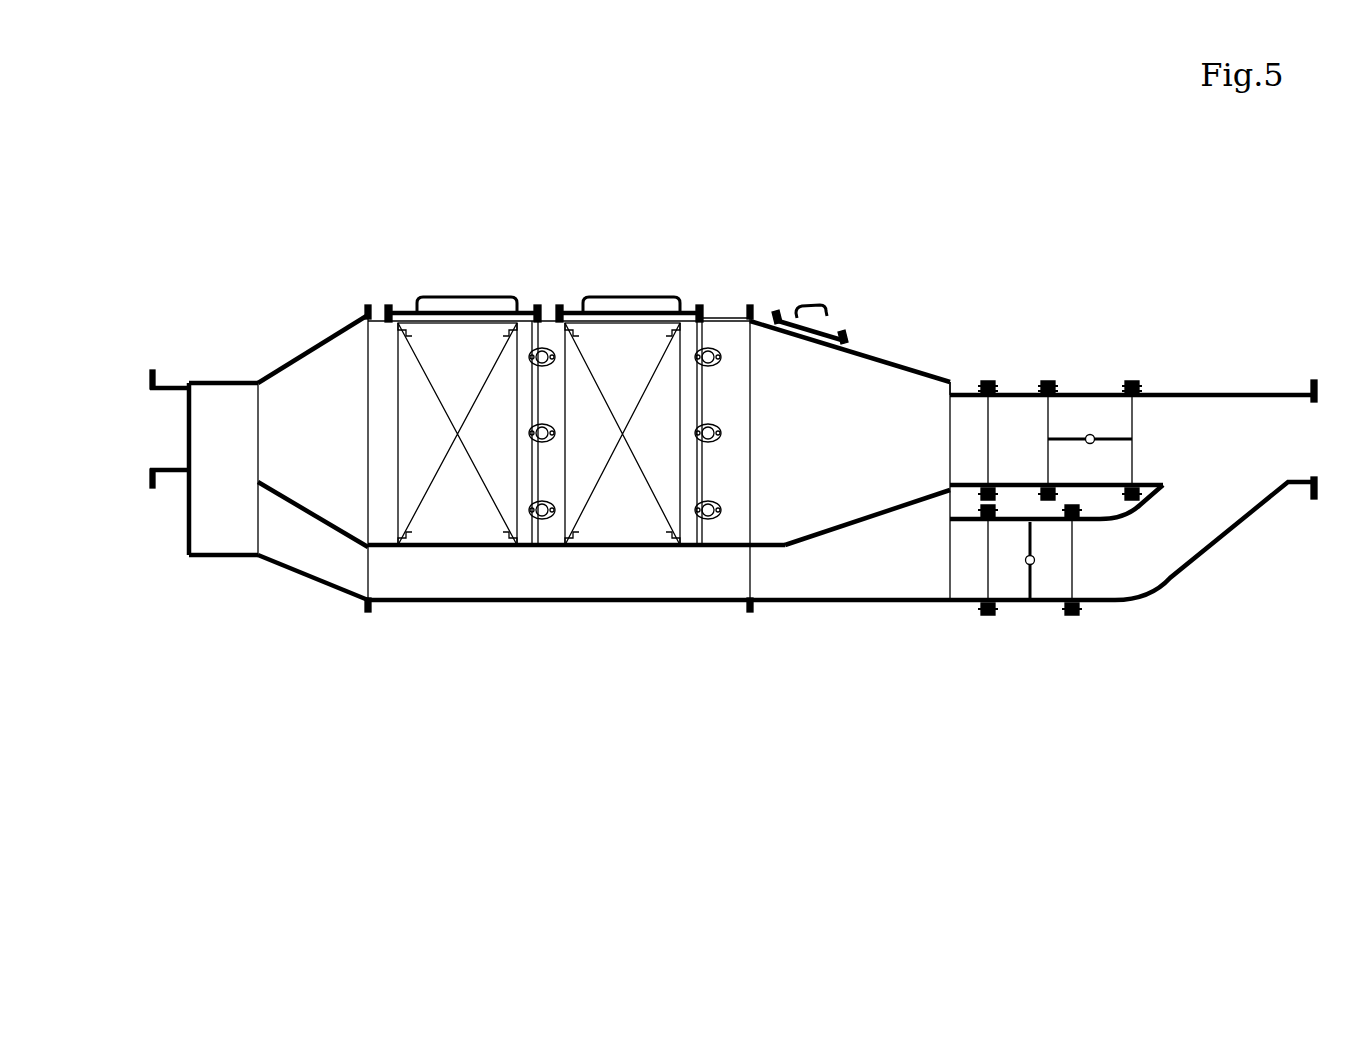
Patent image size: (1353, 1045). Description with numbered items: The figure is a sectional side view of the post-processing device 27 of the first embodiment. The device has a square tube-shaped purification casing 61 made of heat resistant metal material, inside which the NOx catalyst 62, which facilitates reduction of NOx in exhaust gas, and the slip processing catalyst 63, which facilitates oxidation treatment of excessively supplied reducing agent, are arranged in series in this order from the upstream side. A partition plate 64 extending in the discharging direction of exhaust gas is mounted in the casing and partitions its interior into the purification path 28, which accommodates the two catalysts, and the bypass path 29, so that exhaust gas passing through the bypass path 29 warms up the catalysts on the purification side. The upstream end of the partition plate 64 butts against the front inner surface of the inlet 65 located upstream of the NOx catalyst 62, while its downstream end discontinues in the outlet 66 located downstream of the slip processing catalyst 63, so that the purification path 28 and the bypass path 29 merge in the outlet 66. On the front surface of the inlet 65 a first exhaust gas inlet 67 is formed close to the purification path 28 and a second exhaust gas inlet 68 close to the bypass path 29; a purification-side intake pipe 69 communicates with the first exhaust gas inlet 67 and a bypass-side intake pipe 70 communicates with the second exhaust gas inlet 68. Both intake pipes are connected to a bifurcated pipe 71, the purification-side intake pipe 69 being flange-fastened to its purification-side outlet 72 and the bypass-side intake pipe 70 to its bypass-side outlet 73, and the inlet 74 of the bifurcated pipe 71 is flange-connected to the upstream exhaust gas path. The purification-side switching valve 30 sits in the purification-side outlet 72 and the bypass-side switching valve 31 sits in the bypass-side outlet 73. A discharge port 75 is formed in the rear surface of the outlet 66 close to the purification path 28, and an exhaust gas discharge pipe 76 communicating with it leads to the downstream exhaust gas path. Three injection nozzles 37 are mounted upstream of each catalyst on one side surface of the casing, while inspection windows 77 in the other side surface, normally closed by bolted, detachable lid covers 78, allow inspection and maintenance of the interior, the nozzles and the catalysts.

The post-processing device 27 is at (370, 255).
The purification path 28 is at (807, 510).
The bypass path 29 is at (657, 578).
The purification-side switching valve 30 is at (1100, 435).
The bypass-side switching valve 31 is at (1033, 540).
The injection nozzle 37 is at (548, 428).
The purification casing 61 is at (880, 355).
The NOx catalyst 62 is at (620, 520).
The slip processing catalyst 63 is at (455, 515).
The partition plate 64 is at (308, 497).
The inlet 65 is at (913, 556).
The outlet 66 is at (228, 512).
The first exhaust gas inlet 67 is at (962, 400).
The second exhaust gas inlet 68 is at (952, 595).
The purification-side intake pipe 69 is at (975, 382).
The bypass-side intake pipe 70 is at (960, 604).
The bifurcated pipe 71 is at (1224, 388).
The purification-side outlet 72 is at (1075, 385).
The bypass-side outlet 73 is at (1045, 606).
The inlet 74 is at (1295, 497).
The discharge port 75 is at (184, 395).
The exhaust gas discharge pipe 76 is at (170, 473).
The inspection window 77 is at (450, 318).
The lid cover 78 is at (495, 300).